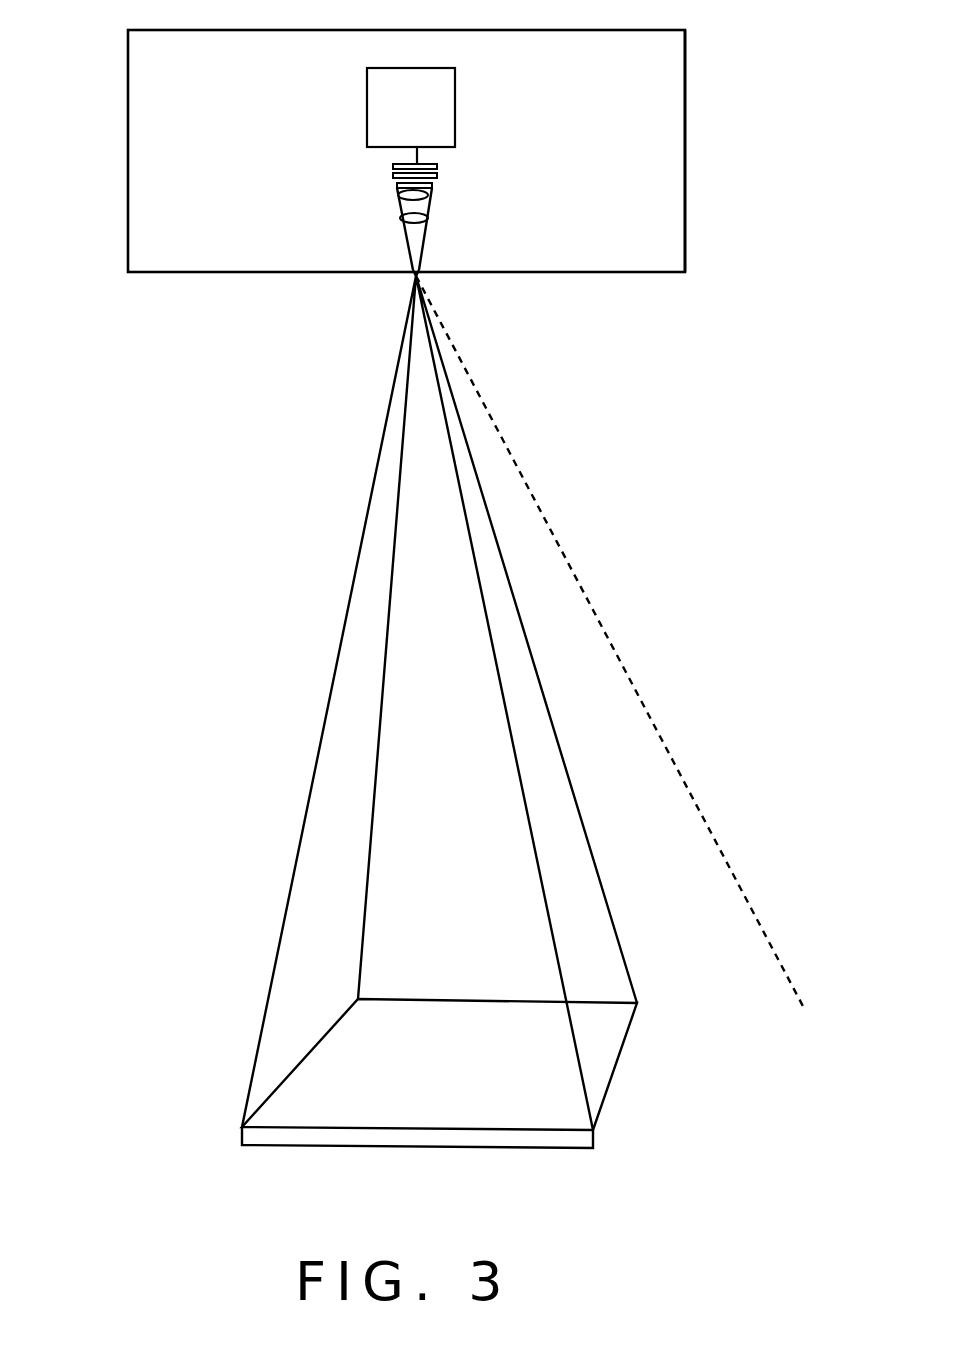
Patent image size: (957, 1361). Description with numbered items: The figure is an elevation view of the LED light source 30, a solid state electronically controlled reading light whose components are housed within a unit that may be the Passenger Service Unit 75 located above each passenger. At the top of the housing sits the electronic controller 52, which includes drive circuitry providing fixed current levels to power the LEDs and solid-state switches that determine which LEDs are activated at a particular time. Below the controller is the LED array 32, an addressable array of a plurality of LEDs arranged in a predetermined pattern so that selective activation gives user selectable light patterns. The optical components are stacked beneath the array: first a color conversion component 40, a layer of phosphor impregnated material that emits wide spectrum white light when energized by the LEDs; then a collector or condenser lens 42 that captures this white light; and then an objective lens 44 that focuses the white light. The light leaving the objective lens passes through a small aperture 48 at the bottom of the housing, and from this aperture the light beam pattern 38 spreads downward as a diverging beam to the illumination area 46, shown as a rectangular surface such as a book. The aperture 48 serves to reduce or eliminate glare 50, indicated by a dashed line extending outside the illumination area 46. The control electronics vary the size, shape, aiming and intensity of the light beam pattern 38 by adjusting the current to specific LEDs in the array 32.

The LED light source 30 is at (107, 203).
The Passenger Service Unit 75 is at (687, 226).
The electronic controller 52 is at (454, 108).
The LED array 32 is at (389, 170).
The color conversion component 40 is at (446, 175).
The collector or condenser lens 42 is at (396, 200).
The objective lens 44 is at (396, 228).
The aperture 48 is at (429, 265).
The light beam pattern 38 is at (264, 872).
The illumination area 46 is at (415, 1084).
The glare 50 is at (618, 650).